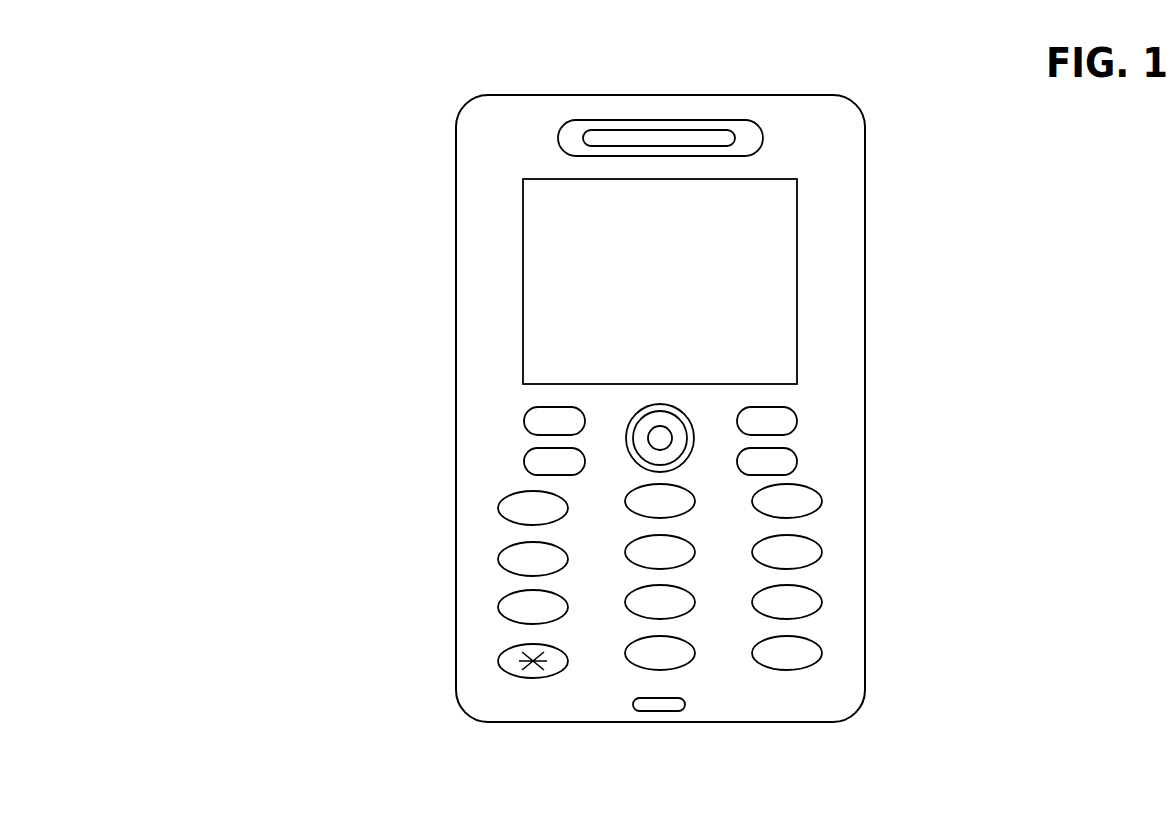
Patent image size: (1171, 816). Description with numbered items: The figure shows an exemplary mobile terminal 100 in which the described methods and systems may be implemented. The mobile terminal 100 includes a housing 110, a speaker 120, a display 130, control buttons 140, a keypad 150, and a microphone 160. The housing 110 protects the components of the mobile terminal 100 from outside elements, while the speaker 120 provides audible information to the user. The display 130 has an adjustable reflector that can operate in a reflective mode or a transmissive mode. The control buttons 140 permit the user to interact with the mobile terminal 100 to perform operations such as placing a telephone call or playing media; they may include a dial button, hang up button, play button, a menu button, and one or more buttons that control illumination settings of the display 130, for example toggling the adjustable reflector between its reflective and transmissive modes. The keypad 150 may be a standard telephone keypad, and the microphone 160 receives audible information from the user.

The mobile terminal 100 is at (180, 64).
The housing 110 is at (456, 125).
The speaker 120 is at (763, 138).
The display 130 is at (797, 281).
The control buttons 140 is at (812, 392).
The keypad 150 is at (832, 670).
The microphone 160 is at (660, 711).